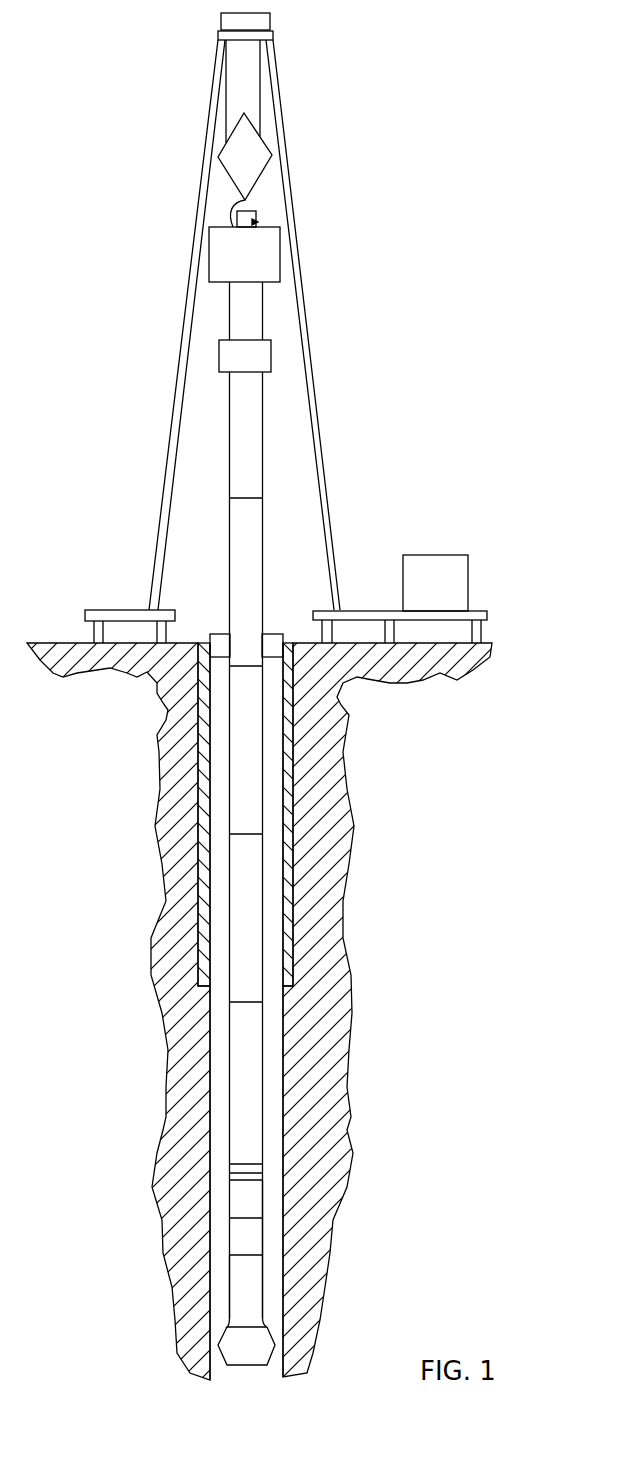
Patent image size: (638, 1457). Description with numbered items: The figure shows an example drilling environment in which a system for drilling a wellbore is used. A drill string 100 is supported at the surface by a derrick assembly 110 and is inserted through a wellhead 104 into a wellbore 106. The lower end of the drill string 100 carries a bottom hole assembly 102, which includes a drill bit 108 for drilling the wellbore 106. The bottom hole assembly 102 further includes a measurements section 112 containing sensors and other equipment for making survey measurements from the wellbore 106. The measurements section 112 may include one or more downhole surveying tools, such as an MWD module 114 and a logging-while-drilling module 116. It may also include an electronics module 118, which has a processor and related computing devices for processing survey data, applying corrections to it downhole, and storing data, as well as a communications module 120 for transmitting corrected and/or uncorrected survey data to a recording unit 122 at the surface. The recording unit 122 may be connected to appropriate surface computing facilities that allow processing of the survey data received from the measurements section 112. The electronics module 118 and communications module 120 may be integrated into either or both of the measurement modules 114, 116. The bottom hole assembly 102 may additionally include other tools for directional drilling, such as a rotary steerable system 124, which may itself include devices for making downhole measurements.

The drill string 100 is at (263, 892).
The bottom hole assembly 102 is at (227, 1282).
The wellhead 104 is at (272, 634).
The wellbore 106 is at (273, 778).
The drill bit 108 is at (253, 1348).
The derrick assembly 110 is at (326, 477).
The measurements section 112 is at (264, 1210).
The MWD module 114 is at (243, 1237).
The logging-while-drilling module 116 is at (243, 1202).
The electronics module 118 is at (253, 1179).
The communications module 120 is at (243, 1168).
The recording unit 122 is at (433, 555).
The rotary steerable system 124 is at (252, 1290).